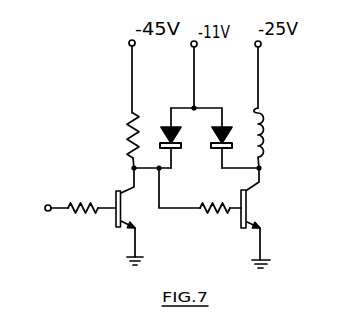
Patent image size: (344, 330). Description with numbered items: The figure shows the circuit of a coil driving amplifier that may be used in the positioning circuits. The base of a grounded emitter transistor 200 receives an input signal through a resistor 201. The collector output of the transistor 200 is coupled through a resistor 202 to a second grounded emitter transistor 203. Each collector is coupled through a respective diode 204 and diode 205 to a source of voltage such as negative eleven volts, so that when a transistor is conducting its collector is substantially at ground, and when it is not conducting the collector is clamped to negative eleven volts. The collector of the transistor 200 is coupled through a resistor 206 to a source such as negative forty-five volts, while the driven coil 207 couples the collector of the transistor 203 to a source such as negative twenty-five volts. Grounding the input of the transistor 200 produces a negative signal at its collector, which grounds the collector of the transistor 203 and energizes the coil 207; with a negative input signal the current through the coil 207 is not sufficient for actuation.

The grounded emitter transistor 200 is at (105, 222).
The resistor 201 is at (97, 205).
The resistor 202 is at (218, 212).
The second grounded emitter transistor 203 is at (263, 207).
The diode 204 is at (167, 126).
The diode 205 is at (225, 126).
The resistor 206 is at (130, 132).
The driven coil 207 is at (263, 119).